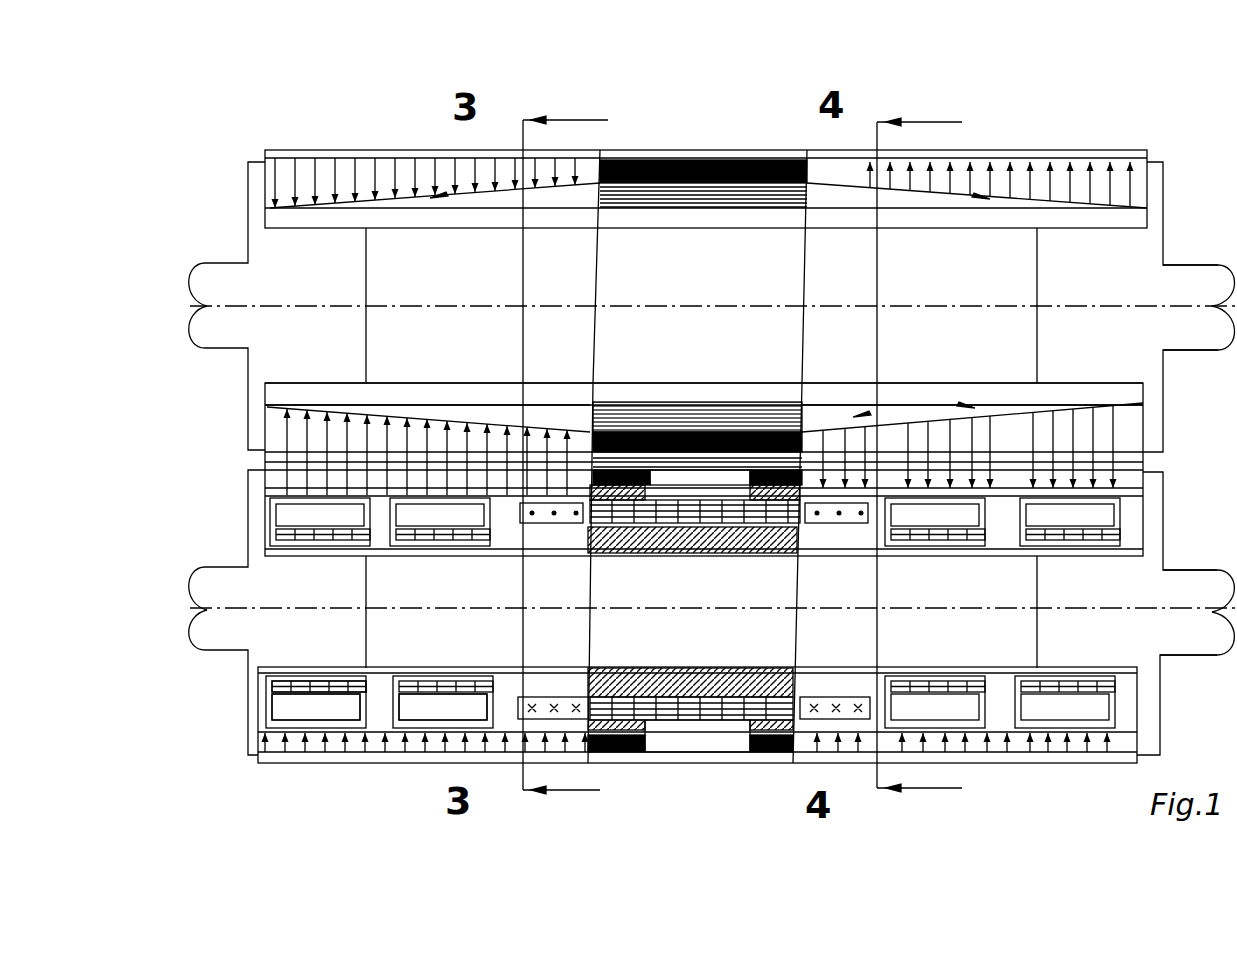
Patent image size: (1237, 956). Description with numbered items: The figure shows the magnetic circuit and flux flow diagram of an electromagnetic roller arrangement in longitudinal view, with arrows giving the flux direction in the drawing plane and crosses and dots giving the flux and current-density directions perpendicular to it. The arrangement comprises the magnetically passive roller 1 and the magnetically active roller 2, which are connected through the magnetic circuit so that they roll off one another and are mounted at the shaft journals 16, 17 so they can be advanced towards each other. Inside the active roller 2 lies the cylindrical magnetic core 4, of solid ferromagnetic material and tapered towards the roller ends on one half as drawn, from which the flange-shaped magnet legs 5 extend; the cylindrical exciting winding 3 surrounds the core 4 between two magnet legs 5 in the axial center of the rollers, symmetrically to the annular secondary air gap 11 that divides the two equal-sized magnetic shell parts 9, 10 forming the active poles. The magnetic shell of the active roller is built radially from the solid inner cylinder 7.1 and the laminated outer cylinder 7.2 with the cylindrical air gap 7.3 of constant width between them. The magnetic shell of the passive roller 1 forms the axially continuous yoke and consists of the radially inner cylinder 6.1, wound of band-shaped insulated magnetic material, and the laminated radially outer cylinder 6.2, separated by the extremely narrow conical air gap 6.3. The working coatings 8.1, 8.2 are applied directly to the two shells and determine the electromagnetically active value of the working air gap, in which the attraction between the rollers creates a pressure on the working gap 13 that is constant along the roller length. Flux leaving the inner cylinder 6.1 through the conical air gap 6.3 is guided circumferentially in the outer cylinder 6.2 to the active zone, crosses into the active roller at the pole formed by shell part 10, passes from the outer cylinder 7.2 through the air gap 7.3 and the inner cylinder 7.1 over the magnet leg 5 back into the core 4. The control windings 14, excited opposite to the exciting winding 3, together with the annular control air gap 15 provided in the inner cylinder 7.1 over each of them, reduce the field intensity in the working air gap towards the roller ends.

The magnetically passive roller 1 is at (706, 171).
The magnetically active roller 2 is at (697, 725).
The cylindrical exciting winding 3 is at (657, 672).
The cylindrical magnetic core 4 is at (685, 672).
The flange-shaped magnet legs 5 is at (482, 662).
The radially inner cylinder 6.1 is at (705, 190).
The radially outer cylinder 6.2 is at (655, 193).
The conical air gap 6.3 is at (680, 193).
The radially inner cylinder 7.1 is at (600, 690).
The outer cylinder 7.2 is at (590, 717).
The cylindrical air gap 7.3 is at (593, 713).
The working coating 8.1 is at (295, 467).
The working coating 8.2 is at (337, 457).
The magnetic shell part 9 is at (665, 553).
The magnetic shell part 10 is at (770, 500).
The annular secondary air gap 11 is at (703, 470).
The working gap 13 is at (550, 460).
The control windings 14 is at (457, 662).
The annular control air gap 15 is at (333, 662).
The shaft journal 16 is at (1175, 315).
The shaft journal 17 is at (1168, 598).